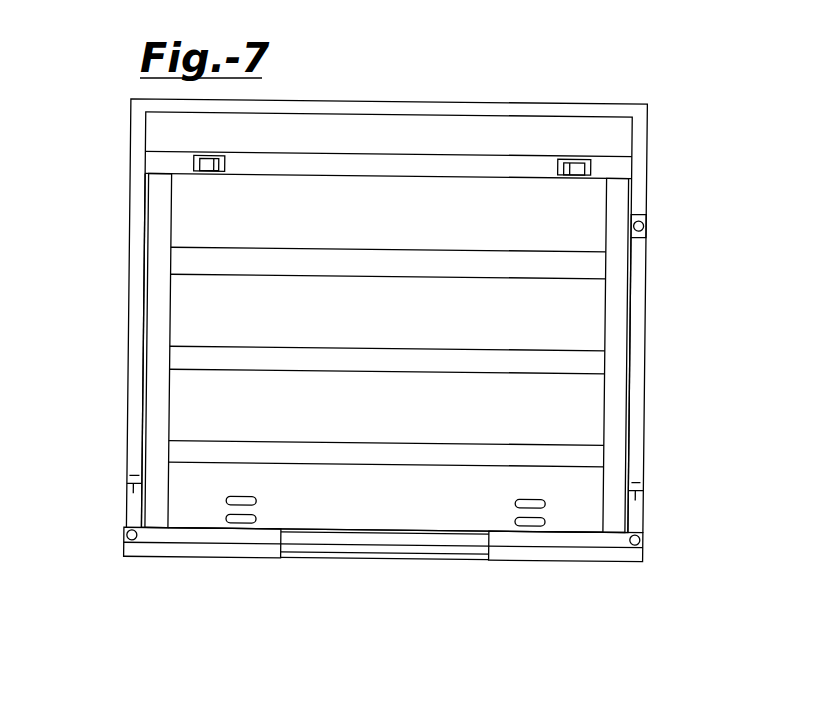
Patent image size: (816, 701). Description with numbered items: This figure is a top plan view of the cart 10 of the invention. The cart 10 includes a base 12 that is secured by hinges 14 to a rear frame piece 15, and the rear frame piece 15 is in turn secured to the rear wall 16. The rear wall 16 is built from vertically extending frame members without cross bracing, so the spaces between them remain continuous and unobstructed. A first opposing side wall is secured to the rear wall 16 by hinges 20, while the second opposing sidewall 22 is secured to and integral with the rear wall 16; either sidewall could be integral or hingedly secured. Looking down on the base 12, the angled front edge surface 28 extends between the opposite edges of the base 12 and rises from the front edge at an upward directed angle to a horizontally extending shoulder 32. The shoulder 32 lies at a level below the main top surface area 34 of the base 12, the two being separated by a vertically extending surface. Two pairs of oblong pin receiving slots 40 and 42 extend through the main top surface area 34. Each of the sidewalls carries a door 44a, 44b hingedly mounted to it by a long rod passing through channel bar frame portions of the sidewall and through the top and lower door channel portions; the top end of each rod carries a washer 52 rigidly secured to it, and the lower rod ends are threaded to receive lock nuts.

The cart 10 is at (330, 577).
The base 12 is at (150, 288).
The hinges 14 is at (190, 167).
The rear frame piece 15 is at (410, 145).
The rear wall 16 is at (388, 97).
The hinges 20 is at (649, 223).
The second opposing sidewall 22 is at (125, 413).
The angled front edge surface 28 is at (422, 553).
The shoulder 32 is at (445, 542).
The main top surface area 34 is at (363, 516).
The pin receiving slots 40 is at (258, 519).
The pin receiving slots 42 is at (258, 503).
The door 44a is at (552, 562).
The door 44b is at (193, 561).
The washer 52 is at (128, 538).